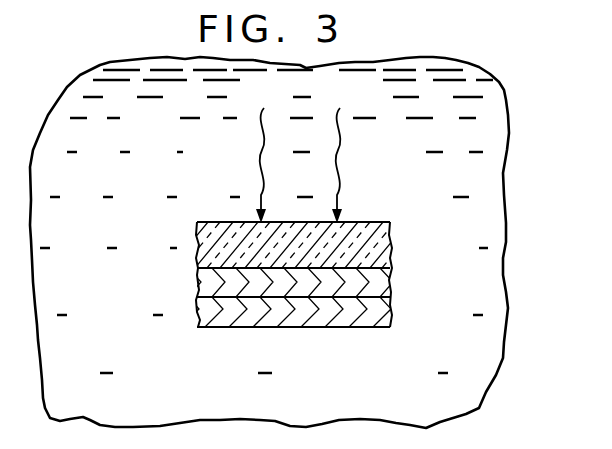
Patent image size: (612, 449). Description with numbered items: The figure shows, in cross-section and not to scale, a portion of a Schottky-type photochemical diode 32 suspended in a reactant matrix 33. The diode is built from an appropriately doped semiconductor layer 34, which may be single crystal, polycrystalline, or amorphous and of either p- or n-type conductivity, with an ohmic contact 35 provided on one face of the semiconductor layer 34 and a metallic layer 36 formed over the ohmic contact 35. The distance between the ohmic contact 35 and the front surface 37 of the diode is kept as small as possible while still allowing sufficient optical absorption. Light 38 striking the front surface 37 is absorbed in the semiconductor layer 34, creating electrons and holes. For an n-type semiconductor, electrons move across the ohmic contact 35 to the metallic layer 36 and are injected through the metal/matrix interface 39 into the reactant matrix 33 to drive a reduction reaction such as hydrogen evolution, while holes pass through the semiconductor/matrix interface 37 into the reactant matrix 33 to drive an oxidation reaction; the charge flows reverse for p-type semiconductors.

The Schottky-type photochemical diode 32 is at (290, 279).
The reactant matrix 33 is at (160, 135).
The semiconductor layer 34 is at (377, 248).
The ohmic contact 35 is at (378, 284).
The metallic layer 36 is at (370, 311).
The front surface / semiconductor/matrix interface 37 is at (372, 222).
The light 38 is at (258, 182).
The metal/matrix interface 39 is at (322, 328).